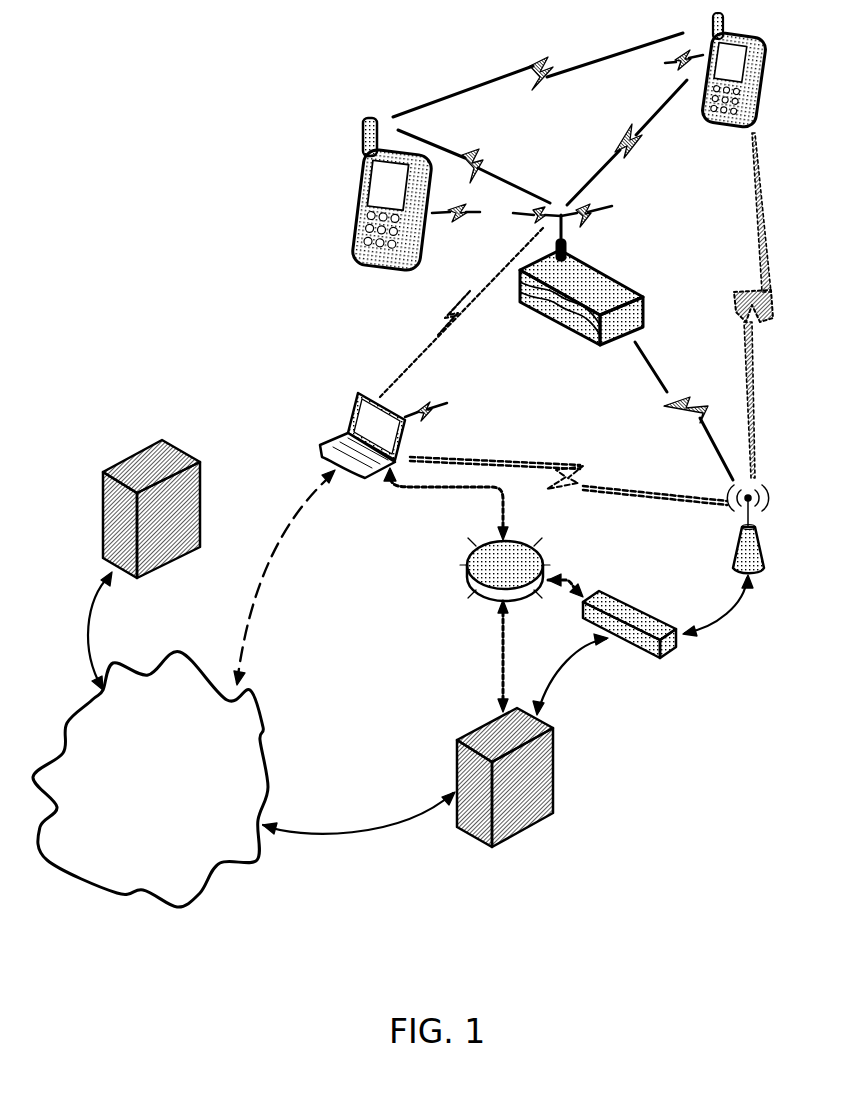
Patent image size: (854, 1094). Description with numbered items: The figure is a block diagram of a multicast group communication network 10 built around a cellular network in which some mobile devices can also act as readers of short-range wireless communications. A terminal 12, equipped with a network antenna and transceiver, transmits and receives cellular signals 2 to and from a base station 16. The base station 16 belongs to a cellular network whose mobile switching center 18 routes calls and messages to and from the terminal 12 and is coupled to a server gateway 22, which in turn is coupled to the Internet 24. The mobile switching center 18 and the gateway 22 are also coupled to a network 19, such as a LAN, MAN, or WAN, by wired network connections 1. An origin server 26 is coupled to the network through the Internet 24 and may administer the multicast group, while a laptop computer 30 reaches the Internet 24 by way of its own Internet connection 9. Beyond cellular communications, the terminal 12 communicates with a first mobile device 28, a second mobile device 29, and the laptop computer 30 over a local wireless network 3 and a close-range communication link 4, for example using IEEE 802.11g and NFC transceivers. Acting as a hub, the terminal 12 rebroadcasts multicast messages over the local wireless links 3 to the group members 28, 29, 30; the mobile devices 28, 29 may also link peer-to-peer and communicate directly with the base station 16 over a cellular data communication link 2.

The wired network connection 1 is at (500, 514).
The cellular signals 2 is at (665, 413).
The local wireless network 3 is at (543, 87).
The close-range communication link 4 is at (513, 213).
The Internet connection 9 is at (292, 535).
The multicast group communication network 10 is at (186, 160).
The terminal 12 is at (607, 270).
The base station 16 is at (751, 526).
The mobile switching center 18 is at (633, 607).
The network 19 is at (518, 578).
The server gateway 22 is at (556, 770).
The Internet 24 is at (260, 730).
The origin server 26 is at (200, 500).
The first mobile device 28 is at (354, 167).
The second mobile device 29 is at (762, 71).
The laptop computer 30 is at (358, 397).